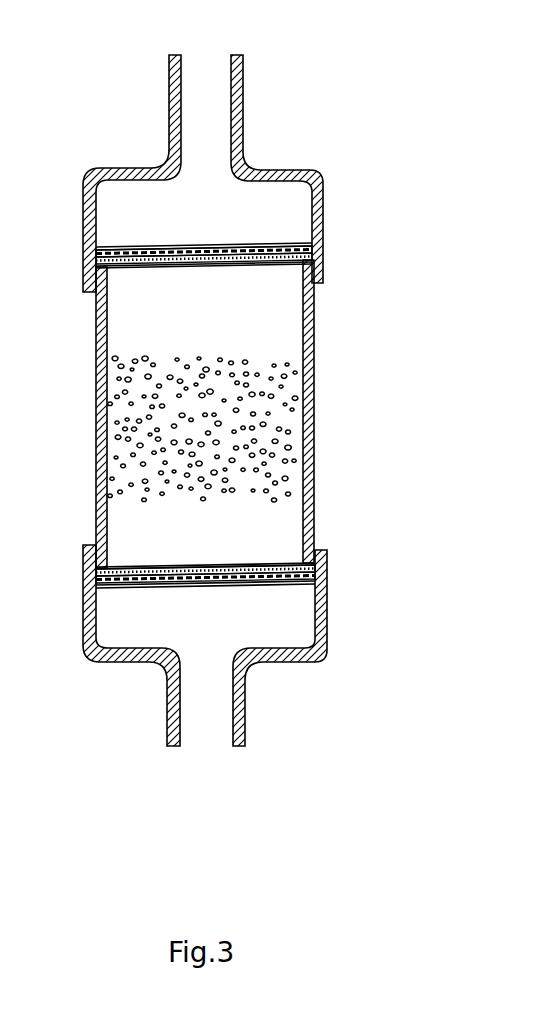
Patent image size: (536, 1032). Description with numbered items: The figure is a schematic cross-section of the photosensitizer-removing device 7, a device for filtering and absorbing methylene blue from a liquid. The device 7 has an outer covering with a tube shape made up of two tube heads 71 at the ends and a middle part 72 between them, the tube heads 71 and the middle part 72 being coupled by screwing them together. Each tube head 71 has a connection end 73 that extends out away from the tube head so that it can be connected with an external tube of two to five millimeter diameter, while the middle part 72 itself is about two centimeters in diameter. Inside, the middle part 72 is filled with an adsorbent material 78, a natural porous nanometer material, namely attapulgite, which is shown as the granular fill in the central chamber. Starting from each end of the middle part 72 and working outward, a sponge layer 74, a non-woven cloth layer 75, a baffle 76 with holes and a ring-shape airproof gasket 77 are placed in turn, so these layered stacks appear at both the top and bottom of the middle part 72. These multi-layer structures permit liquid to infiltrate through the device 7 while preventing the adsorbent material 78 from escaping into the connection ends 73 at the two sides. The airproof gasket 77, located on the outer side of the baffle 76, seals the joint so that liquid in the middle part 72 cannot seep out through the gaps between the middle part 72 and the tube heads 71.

The photosensitizer-removing device 7 is at (72, 337).
The tube head 71 is at (323, 186).
The middle part 72 is at (315, 398).
The connection end 73 is at (236, 88).
The sponge layer 74 is at (207, 267).
The non-woven cloth layer 75 is at (257, 266).
The baffle with holes 76 is at (305, 262).
The ring-shape airproof gasket 77 is at (262, 246).
The adsorbent material 78 is at (245, 448).